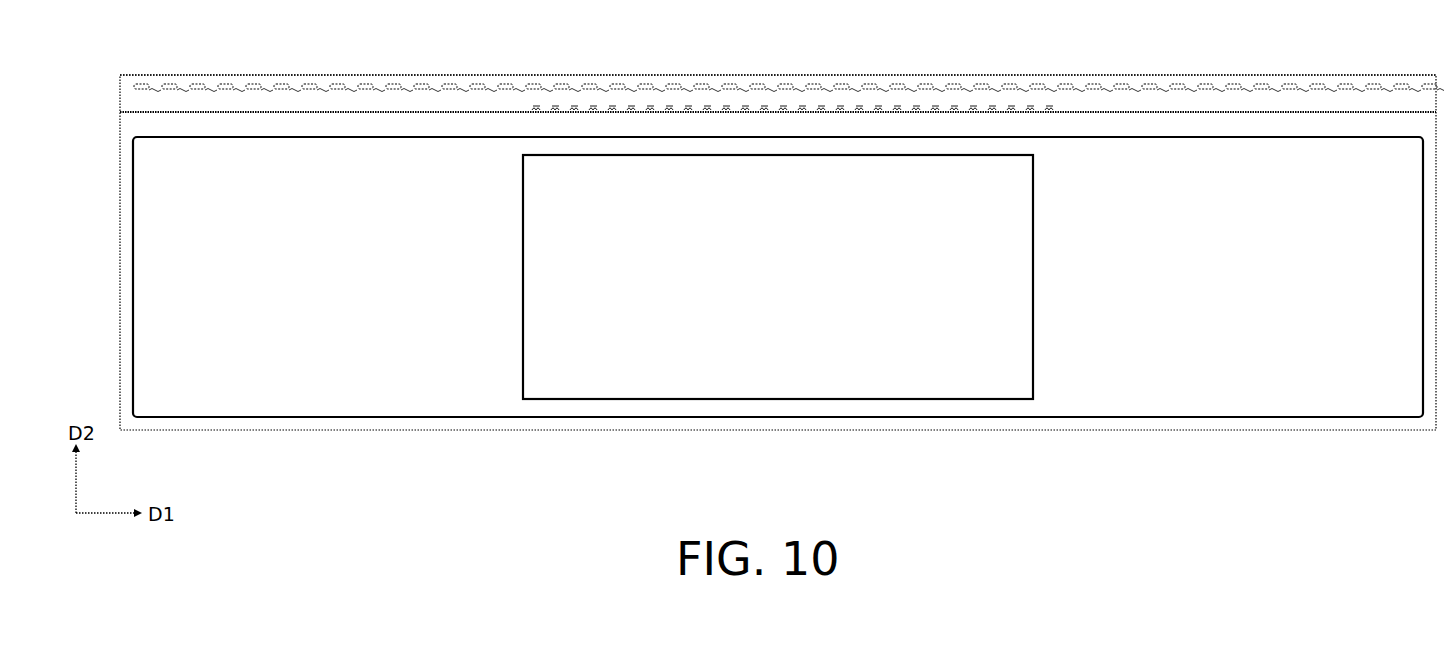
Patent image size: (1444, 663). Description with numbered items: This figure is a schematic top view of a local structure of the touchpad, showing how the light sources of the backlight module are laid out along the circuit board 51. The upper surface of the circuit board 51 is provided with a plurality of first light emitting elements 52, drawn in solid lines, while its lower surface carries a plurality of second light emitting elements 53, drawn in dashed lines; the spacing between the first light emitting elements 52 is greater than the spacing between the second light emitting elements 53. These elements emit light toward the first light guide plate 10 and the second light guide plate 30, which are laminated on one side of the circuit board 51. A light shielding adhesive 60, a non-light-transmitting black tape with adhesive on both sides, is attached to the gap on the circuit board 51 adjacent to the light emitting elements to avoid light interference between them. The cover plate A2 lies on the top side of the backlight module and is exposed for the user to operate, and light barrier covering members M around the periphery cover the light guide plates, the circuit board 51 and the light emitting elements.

The first light guide plate 10 is at (1190, 395).
The second light guide plate 30 is at (840, 397).
The circuit board 51 is at (283, 75).
The first light emitting element 52 is at (207, 85).
The second light emitting element 53 is at (557, 112).
The light shielding adhesive 60 is at (370, 100).
The cover plate A2 is at (658, 375).
The light barrier covering member M is at (295, 423).